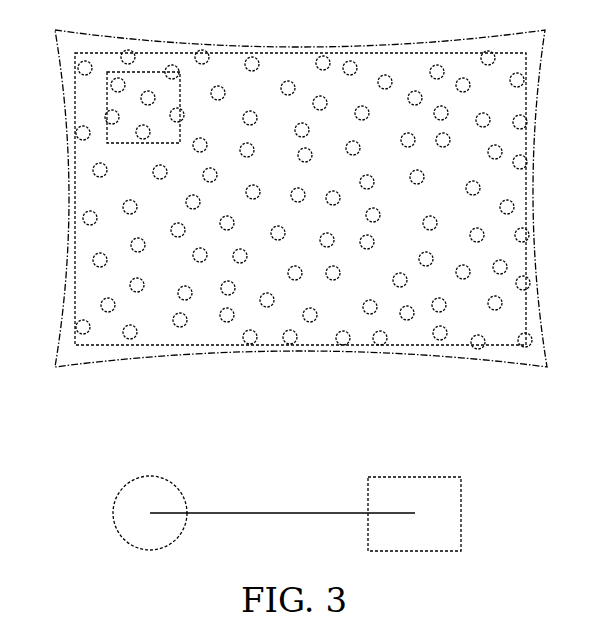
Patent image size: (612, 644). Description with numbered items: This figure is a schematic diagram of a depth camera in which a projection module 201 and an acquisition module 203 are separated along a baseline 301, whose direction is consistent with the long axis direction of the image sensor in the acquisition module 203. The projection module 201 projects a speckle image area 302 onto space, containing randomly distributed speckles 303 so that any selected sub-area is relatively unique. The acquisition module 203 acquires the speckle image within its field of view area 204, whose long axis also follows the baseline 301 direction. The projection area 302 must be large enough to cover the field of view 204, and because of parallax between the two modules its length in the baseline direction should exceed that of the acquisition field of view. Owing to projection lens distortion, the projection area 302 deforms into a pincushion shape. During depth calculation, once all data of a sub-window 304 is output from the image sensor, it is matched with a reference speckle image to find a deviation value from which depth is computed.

The field of view area 204 is at (70, 200).
The speckle image area 302 is at (535, 148).
The speckles 303 is at (512, 198).
The sub-window 304 is at (107, 110).
The projection module 201 is at (160, 477).
The baseline 301 is at (255, 512).
The acquisition module 203 is at (415, 476).